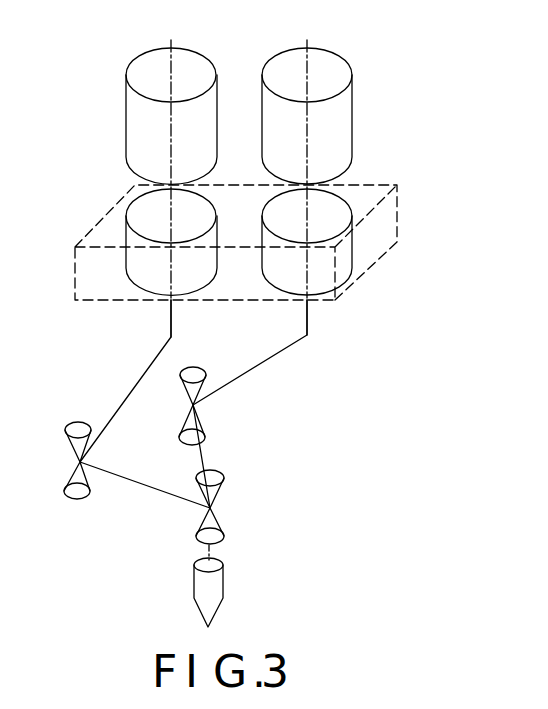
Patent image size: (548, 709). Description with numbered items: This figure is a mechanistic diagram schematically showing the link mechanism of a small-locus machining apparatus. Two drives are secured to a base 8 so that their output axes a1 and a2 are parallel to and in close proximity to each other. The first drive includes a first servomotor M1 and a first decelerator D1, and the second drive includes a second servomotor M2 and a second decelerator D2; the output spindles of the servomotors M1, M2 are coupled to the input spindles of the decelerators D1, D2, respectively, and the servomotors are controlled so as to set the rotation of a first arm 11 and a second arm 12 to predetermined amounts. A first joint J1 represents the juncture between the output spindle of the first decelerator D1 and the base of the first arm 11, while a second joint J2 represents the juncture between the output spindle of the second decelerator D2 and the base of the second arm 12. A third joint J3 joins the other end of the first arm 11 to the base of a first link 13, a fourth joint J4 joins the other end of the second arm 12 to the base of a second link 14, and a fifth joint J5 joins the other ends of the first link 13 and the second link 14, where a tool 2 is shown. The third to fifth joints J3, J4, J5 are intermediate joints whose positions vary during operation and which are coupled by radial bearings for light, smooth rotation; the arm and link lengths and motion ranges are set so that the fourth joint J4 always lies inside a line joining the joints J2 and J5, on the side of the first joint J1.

The output axis a1 is at (177, 152).
The output axis a2 is at (312, 151).
The first servomotor M1 is at (135, 128).
The second servomotor M2 is at (342, 110).
The first decelerator D1 is at (142, 206).
The second decelerator D2 is at (337, 205).
The base 8 is at (399, 239).
The first joint J1 is at (153, 322).
The second joint J2 is at (325, 322).
The third joint J3 is at (94, 460).
The fourth joint J4 is at (206, 406).
The fifth joint J5 is at (223, 507).
The first arm 11 is at (120, 395).
The second arm 12 is at (260, 368).
The first link 13 is at (143, 492).
The second link 14 is at (203, 453).
The tool 2 is at (225, 575).